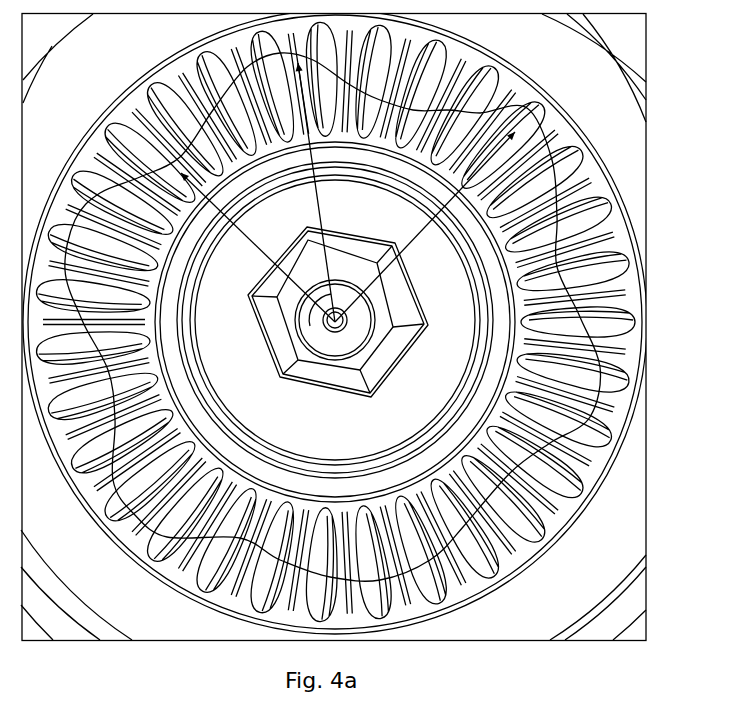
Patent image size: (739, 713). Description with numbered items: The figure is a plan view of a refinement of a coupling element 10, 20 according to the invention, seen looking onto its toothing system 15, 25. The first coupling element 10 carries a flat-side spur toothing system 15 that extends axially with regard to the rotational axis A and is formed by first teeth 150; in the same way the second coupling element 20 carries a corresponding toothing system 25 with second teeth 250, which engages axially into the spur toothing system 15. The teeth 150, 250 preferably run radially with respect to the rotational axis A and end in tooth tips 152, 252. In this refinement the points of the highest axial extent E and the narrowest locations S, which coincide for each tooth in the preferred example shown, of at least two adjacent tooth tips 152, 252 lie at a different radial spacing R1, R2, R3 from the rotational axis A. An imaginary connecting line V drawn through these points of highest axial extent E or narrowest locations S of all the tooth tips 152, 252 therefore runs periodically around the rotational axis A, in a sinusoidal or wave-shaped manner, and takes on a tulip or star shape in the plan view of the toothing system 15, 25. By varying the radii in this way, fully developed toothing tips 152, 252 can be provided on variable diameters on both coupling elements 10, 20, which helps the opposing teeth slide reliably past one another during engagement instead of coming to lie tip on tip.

The first coupling element 10 is at (376, 325).
The second coupling element 20 is at (650, 90).
The spur toothing system 15 is at (384, 322).
The corresponding toothing system 25 is at (384, 322).
The first teeth 150 is at (625, 236).
The second teeth 250 is at (600, 235).
The tooth tips 152 is at (557, 504).
The tooth tips 252 is at (512, 473).
The connecting line V is at (319, 305).
The highest axial extent E is at (319, 305).
The narrowest location S is at (192, 97).
The radial spacing R1 is at (258, 247).
The radial spacing R2 is at (320, 192).
The radial spacing R3 is at (425, 227).
The rotational axis A is at (345, 327).